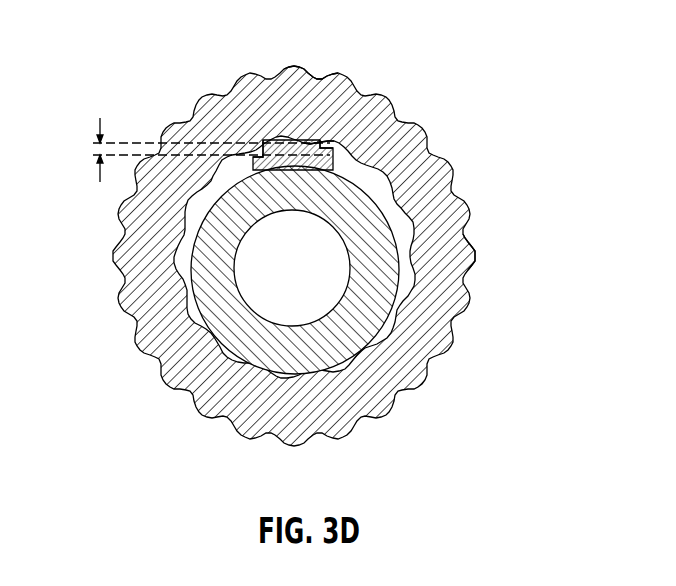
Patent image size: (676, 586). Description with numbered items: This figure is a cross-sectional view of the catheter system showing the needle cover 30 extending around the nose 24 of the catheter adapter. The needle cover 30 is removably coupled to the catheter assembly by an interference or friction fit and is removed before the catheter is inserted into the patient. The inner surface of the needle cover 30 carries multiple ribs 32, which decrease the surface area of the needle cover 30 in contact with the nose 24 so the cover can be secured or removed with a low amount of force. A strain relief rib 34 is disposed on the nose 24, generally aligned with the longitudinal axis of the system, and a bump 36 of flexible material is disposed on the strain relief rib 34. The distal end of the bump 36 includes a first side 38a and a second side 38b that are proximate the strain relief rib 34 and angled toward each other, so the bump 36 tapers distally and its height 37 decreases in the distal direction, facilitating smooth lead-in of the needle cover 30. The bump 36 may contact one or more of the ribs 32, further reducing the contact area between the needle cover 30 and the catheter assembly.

The nose 24 is at (367, 288).
The needle cover 30 is at (450, 240).
The ribs 32 is at (297, 143).
The strain relief rib 34 is at (243, 165).
The bump 36 is at (312, 142).
The height 37 is at (97, 173).
The first side 38a is at (278, 150).
The second side 38b is at (368, 108).